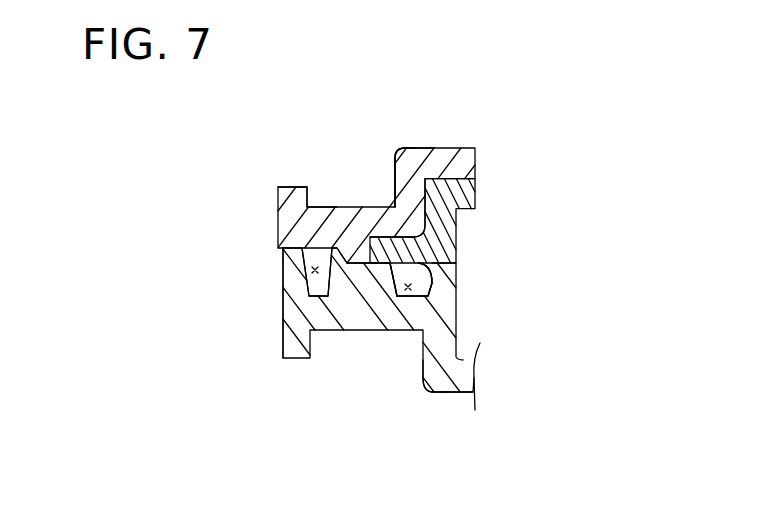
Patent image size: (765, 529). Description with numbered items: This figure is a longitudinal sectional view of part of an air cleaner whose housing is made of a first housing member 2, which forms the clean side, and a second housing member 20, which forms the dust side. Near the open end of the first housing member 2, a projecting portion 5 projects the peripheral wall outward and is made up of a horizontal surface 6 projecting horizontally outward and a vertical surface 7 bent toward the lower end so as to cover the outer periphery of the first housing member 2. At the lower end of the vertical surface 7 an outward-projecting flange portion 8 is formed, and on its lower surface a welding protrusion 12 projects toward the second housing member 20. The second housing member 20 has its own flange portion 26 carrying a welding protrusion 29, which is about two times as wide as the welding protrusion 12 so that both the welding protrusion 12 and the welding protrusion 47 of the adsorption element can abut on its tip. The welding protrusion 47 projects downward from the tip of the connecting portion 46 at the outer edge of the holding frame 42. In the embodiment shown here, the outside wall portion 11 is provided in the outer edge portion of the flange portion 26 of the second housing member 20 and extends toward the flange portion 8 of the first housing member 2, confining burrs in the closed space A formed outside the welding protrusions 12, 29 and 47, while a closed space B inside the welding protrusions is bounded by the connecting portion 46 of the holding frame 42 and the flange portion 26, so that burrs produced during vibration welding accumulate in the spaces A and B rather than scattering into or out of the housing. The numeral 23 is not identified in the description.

The first housing member 2 is at (456, 148).
The projecting portion 5 is at (395, 147).
The horizontal surface 6 is at (428, 147).
The vertical surface 7 is at (392, 180).
The flange portion 8 is at (327, 207).
The outside wall portion 11 is at (306, 275).
The welding protrusion 12 is at (323, 258).
The second housing member 20 is at (457, 393).
The bottom wall 23 is at (433, 393).
The flange portion 26 is at (335, 322).
The welding protrusion 29 is at (305, 277).
The holding frame 42 is at (458, 237).
The connecting portion 46 is at (413, 287).
The welding protrusion 47 is at (368, 266).
The closed space A is at (311, 270).
The closed space B is at (432, 274).